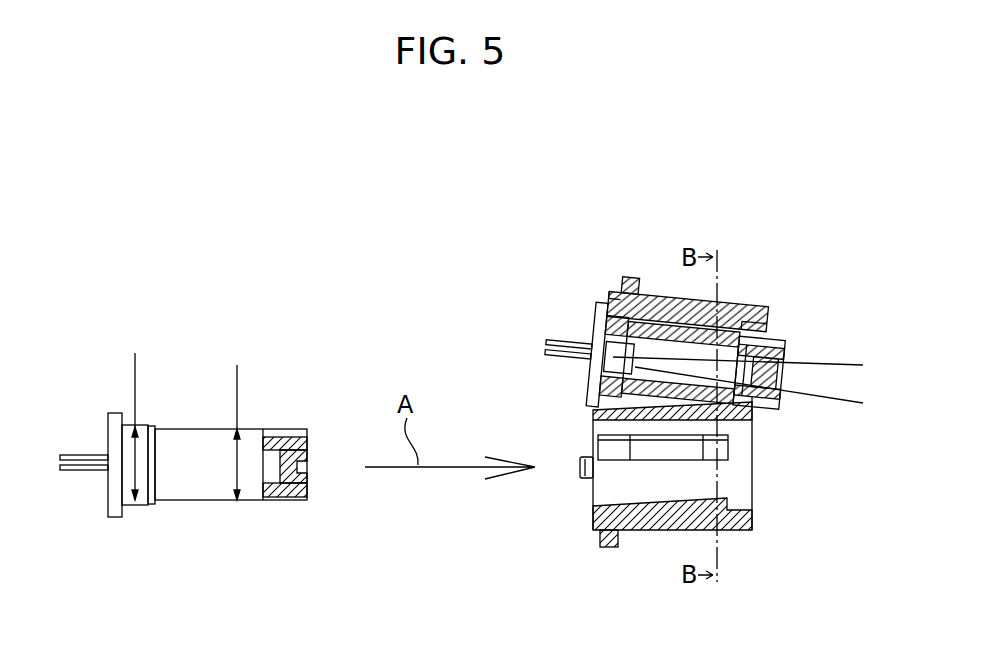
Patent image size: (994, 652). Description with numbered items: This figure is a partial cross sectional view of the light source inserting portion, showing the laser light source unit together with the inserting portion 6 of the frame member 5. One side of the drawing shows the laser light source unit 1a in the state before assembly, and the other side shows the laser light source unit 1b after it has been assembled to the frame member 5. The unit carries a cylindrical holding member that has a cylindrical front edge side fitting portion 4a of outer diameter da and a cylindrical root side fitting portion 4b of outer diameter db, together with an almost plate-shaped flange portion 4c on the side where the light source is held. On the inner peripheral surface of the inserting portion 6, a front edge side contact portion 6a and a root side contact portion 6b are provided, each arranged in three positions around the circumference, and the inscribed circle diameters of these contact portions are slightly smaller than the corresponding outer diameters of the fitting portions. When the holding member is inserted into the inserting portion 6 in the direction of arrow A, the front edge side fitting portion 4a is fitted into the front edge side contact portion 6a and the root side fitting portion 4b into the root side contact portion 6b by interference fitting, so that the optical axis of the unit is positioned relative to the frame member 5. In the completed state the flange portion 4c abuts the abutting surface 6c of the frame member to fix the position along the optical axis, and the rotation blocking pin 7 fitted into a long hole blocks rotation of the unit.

The laser light source unit 1a is at (192, 423).
The laser light source unit 1b is at (600, 308).
The front edge side fitting portion 4a is at (252, 490).
The root side fitting portion 4b is at (150, 497).
The flange portion 4c is at (117, 412).
The frame member 5 is at (628, 286).
The inserting portion 6 is at (754, 416).
The front edge side contact portion 6a is at (735, 475).
The root side contact portion 6b is at (594, 445).
The abutting surface 6c is at (612, 280).
The rotation blocking pin 7 is at (580, 470).